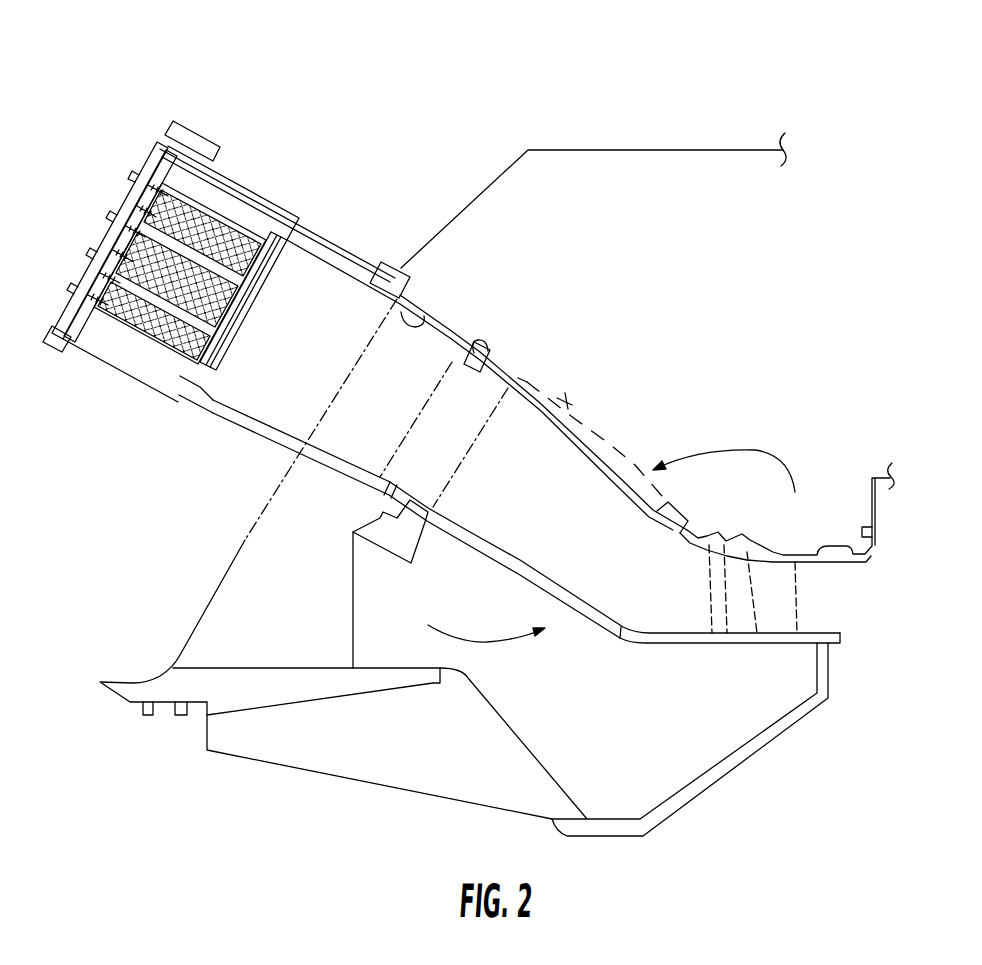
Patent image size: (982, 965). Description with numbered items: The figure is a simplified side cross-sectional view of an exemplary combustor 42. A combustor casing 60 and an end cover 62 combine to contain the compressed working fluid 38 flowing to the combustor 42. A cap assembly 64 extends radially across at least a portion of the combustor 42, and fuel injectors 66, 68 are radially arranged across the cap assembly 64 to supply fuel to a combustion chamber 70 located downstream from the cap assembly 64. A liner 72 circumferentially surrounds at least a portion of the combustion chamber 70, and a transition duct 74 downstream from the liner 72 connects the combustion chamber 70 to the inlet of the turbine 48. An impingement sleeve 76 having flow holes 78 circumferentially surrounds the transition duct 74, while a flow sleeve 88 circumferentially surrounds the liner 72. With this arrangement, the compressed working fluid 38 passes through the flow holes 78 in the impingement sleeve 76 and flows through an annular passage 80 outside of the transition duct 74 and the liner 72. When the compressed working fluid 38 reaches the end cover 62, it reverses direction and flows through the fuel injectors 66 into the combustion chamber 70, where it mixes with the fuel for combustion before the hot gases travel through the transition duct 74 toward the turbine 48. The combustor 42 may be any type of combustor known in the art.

The compressed working fluid 38 is at (760, 447).
The combustor 42 is at (360, 113).
The turbine 48 is at (837, 609).
The combustor casing 60 is at (340, 246).
The end cover 62 is at (78, 290).
The cap assembly 64 is at (163, 399).
The fuel injector 66 is at (240, 233).
The fuel injector 68 is at (182, 250).
The combustion chamber 70 is at (308, 352).
The liner 72 is at (422, 325).
The transition duct 74 is at (622, 640).
The impingement sleeve 76 is at (565, 402).
The flow holes 78 is at (518, 378).
The annular passage 80 is at (600, 437).
The flow sleeve 88 is at (460, 338).